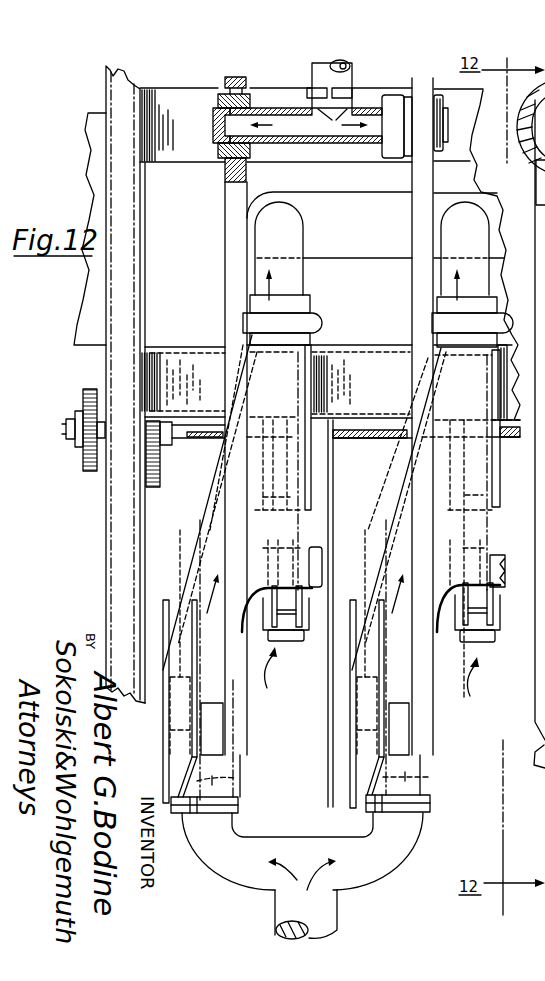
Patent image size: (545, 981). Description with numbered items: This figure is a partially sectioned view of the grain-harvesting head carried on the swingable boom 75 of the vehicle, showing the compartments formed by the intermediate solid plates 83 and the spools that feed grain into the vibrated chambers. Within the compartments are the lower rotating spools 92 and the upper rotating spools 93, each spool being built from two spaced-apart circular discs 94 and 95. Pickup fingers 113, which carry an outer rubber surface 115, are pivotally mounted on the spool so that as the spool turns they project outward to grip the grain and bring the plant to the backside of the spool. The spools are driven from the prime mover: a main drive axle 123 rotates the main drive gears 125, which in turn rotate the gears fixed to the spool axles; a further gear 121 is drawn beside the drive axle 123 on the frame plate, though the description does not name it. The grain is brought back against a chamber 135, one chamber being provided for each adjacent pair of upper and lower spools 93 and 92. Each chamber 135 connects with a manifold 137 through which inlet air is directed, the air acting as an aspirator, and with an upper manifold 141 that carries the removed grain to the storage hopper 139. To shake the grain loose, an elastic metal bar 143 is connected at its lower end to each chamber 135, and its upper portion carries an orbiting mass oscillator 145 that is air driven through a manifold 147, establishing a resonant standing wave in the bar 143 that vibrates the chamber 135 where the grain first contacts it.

The storage hopper 139 is at (95, 192).
The swingable boom 75 is at (125, 543).
The gear 121 is at (88, 389).
The main drive axle 123 is at (68, 437).
The main drive gear 125 is at (161, 461).
The upper manifold 141 is at (363, 247).
The air manifold 147 is at (325, 143).
The orbiting mass oscillator 145 is at (392, 95).
The elastic metal bar 143 is at (233, 237).
The disc 95 is at (288, 416).
The intermediate solid plate 83 is at (334, 493).
The disc 94 is at (306, 528).
The chamber 135 is at (218, 548).
The lower rotating spool 92 is at (170, 597).
The pickup finger 113 is at (373, 607).
The rubber surface 115 is at (286, 640).
The upper rotating spool 93 is at (373, 684).
The manifold 137 is at (235, 870).